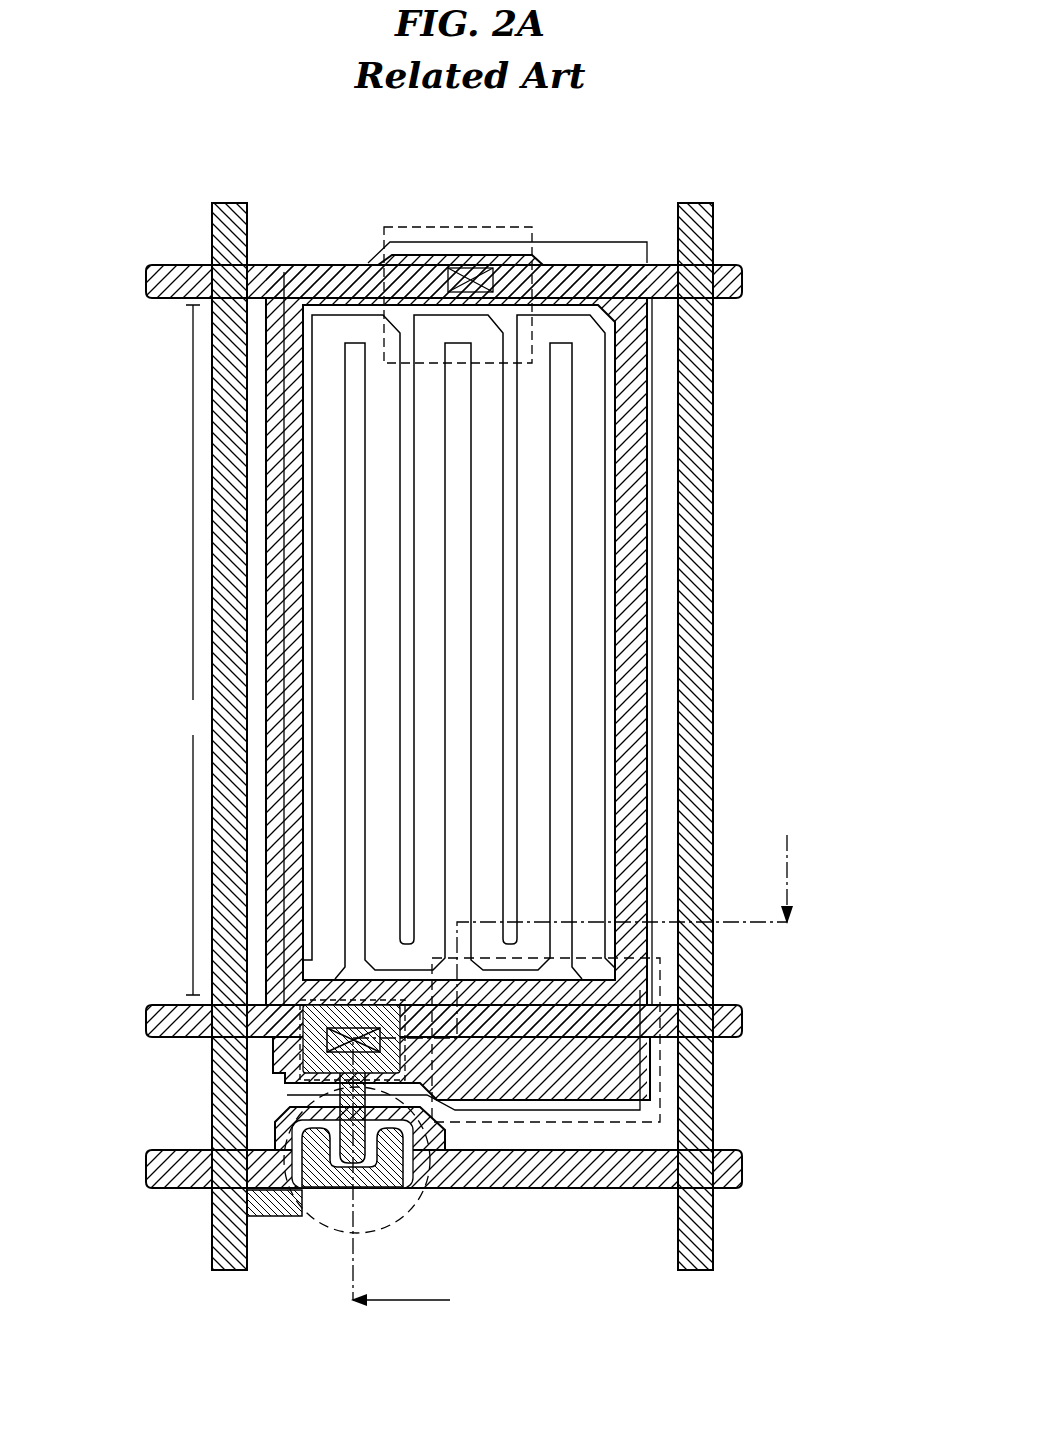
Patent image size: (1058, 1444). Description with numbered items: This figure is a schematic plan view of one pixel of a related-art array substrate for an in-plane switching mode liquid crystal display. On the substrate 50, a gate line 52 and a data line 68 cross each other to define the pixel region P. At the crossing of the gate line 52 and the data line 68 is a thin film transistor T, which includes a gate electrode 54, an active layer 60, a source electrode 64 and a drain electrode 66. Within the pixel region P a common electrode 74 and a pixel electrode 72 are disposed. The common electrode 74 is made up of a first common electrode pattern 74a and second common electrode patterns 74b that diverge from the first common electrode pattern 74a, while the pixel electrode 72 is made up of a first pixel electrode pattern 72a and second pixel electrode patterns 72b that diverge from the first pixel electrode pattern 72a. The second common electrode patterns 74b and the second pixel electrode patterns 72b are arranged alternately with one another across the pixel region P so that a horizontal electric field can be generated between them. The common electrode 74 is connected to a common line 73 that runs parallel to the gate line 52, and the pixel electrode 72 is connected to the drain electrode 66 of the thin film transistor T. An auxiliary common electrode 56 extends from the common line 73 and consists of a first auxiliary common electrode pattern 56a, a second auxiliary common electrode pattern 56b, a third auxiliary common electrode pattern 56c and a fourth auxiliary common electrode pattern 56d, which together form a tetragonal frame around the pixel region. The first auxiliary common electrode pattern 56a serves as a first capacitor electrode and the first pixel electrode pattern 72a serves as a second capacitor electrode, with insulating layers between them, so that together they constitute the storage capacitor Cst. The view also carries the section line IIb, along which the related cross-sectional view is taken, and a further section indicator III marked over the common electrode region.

The substrate 50 is at (788, 1293).
The gate line 52 is at (742, 1180).
The gate electrode 54 is at (283, 1107).
The auxiliary common electrode 56 is at (660, 470).
The first auxiliary common electrode pattern 56a is at (610, 1102).
The second auxiliary common electrode pattern 56b is at (302, 265).
The third auxiliary common electrode pattern 56c is at (264, 535).
The fourth auxiliary common electrode pattern 56d is at (653, 535).
The active layer 60 is at (330, 1200).
The source electrode 64 is at (415, 1195).
The drain electrode 66 is at (262, 1062).
The data line 68 is at (713, 600).
The pixel electrode 72 is at (560, 1150).
The first pixel electrode pattern 72a is at (655, 1090).
The second pixel electrode pattern 72b is at (343, 745).
The common line 73 is at (742, 283).
The common electrode 74 is at (572, 228).
The first common electrode pattern 74a is at (612, 252).
The second common electrode pattern 74b is at (267, 422).
The storage capacitor Cst is at (660, 990).
The thin film transistor T is at (300, 1200).
The pixel region P is at (193, 650).
The section line III is at (470, 227).
The section line IIb- IIb is at (575, 1056).